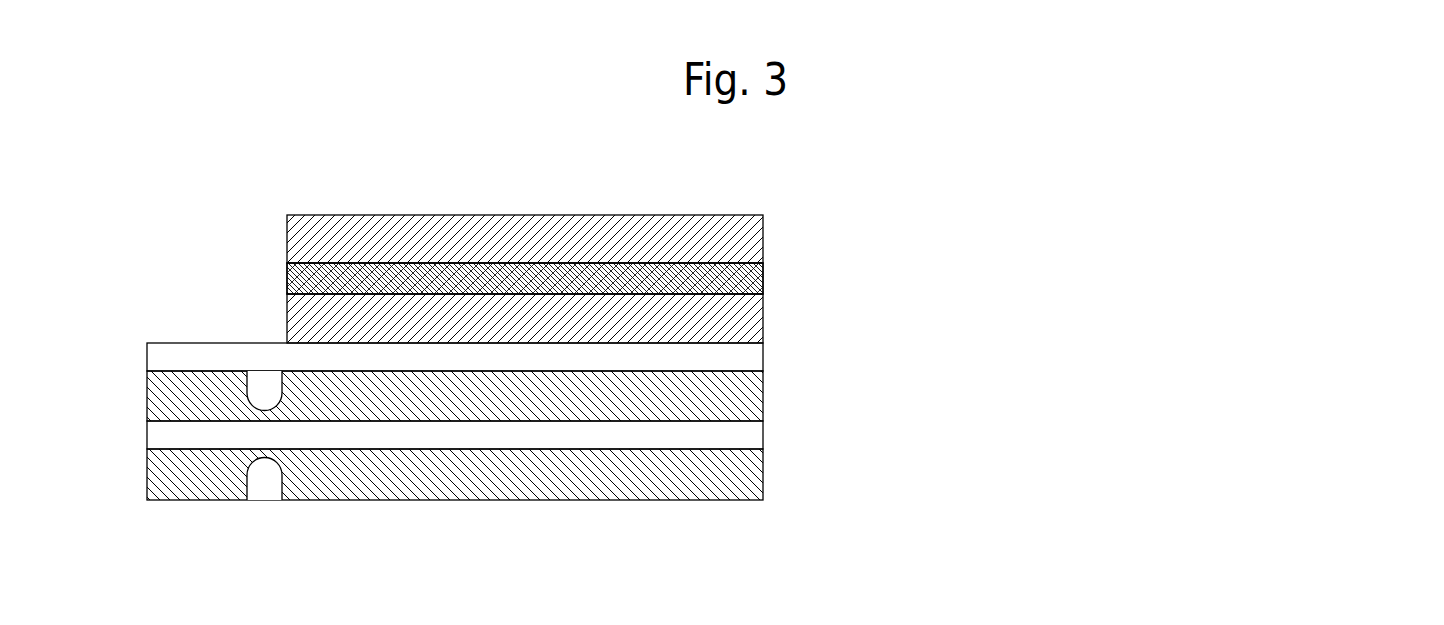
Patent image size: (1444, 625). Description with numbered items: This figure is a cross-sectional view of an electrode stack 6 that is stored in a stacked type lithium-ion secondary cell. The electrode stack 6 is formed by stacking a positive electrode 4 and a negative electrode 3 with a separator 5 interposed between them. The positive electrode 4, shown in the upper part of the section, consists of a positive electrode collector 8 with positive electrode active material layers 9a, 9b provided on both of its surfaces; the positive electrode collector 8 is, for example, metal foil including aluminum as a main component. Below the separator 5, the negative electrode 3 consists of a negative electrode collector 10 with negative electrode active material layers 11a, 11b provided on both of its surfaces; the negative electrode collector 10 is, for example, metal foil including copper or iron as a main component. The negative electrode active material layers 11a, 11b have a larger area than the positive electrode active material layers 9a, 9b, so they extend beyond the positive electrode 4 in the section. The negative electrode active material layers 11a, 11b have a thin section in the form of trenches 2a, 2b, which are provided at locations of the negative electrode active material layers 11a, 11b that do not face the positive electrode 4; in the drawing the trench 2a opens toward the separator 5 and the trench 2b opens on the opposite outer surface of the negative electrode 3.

The trench 2a is at (252, 343).
The trench 2b is at (268, 502).
The negative electrode 3 is at (704, 443).
The positive electrode 4 is at (774, 266).
The separator 5 is at (765, 360).
The electrode stack 6 is at (787, 352).
The positive electrode collector 8 is at (765, 277).
The positive electrode active material layer 9a is at (765, 230).
The positive electrode active material layer 9b is at (765, 317).
The negative electrode collector 10 is at (765, 435).
The negative electrode active material layer 11a is at (765, 388).
The negative electrode active material layer 11b is at (765, 478).